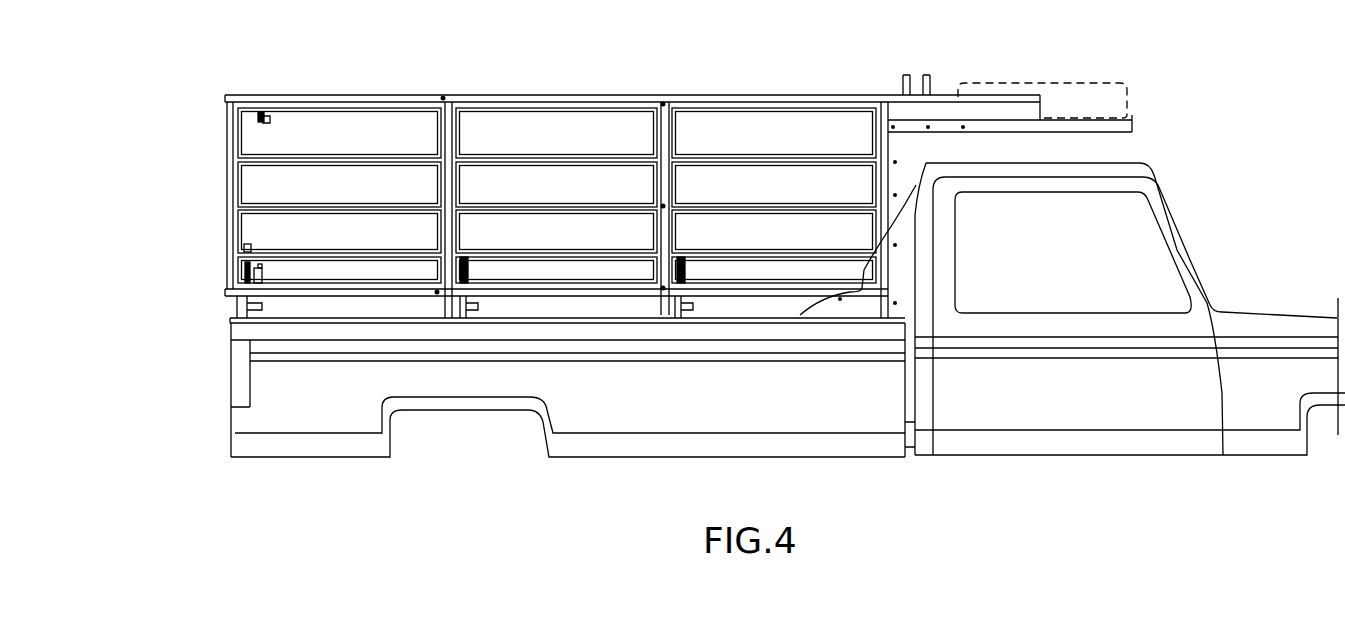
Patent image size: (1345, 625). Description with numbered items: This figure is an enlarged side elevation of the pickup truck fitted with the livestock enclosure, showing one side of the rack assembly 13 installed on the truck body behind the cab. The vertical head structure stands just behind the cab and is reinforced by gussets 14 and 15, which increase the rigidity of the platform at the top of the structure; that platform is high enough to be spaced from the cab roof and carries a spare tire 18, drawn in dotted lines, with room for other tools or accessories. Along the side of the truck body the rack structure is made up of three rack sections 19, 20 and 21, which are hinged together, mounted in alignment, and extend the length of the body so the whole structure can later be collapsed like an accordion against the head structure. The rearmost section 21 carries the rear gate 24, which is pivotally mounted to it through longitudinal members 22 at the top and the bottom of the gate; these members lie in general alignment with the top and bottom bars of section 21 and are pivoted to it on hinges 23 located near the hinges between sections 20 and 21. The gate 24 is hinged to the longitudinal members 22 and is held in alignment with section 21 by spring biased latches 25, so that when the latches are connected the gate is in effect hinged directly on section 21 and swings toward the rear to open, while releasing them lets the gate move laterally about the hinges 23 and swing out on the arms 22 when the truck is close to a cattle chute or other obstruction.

The rack assembly 13 is at (557, 165).
The gusset 14 is at (880, 275).
The gusset 15 is at (905, 188).
The spare tire 18 is at (1107, 88).
The rack section 19 is at (765, 95).
The rack section 20 is at (575, 95).
The rack section 21 is at (357, 110).
The longitudinal member 22 is at (338, 94).
The hinge 23 is at (443, 97).
The gate 24 is at (228, 205).
The spring biased latch 25 is at (258, 118).